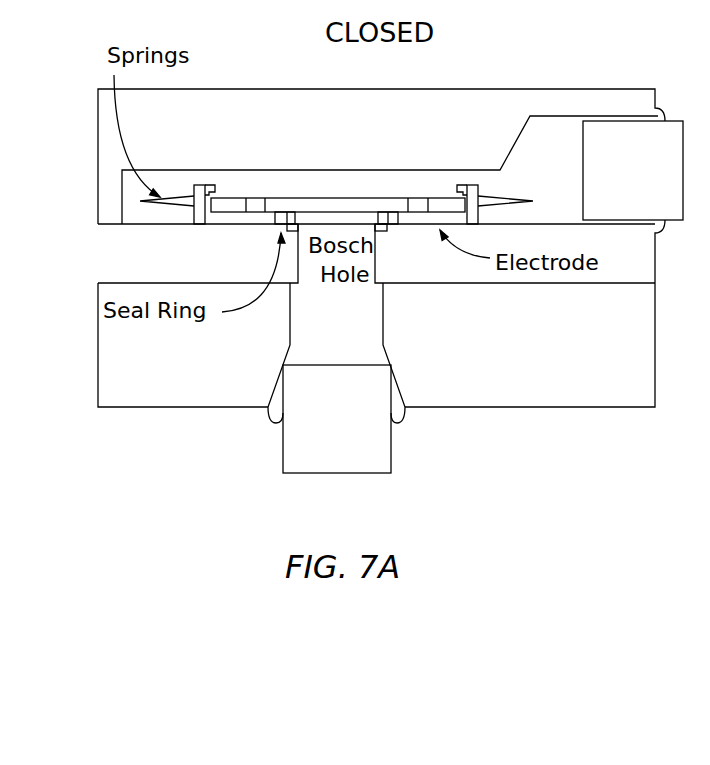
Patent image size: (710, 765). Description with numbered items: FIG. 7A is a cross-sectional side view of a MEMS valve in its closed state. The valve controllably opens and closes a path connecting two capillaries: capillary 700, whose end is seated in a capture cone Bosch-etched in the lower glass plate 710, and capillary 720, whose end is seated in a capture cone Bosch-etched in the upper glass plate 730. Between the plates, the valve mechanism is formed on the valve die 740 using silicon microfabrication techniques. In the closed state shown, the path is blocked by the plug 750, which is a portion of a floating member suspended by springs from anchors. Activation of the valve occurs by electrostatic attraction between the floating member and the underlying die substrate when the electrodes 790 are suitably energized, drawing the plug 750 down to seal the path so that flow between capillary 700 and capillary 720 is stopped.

The capillary 700 is at (360, 431).
The lower glass plate 710 is at (165, 380).
The capillary 720 is at (652, 176).
The upper glass plate 730 is at (273, 143).
The valve die 740 is at (165, 266).
The plug 750 is at (333, 218).
The electrodes 790 is at (417, 222).